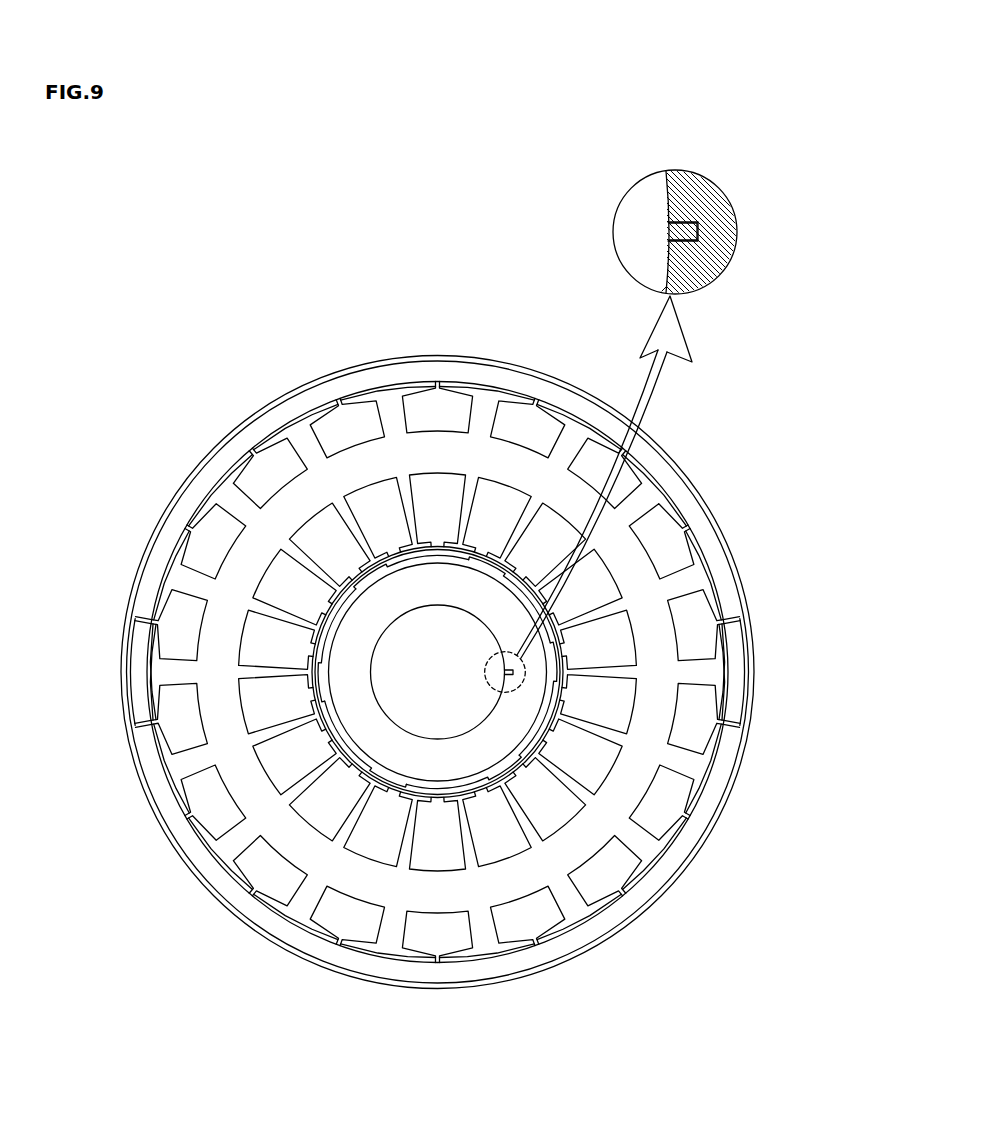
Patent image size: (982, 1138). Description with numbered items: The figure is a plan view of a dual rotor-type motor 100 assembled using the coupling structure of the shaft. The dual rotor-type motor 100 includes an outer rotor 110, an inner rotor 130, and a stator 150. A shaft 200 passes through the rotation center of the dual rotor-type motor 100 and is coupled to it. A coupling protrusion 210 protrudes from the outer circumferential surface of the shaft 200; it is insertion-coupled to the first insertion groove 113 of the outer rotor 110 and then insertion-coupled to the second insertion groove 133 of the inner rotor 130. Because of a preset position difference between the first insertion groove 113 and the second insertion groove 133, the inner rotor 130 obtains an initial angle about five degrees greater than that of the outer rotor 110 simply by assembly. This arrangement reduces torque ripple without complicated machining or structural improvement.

The dual rotor-type motor 100 is at (230, 385).
The outer rotor 110 is at (661, 470).
The first insertion groove 113 is at (700, 229).
The inner rotor 130 is at (520, 706).
The second insertion groove 133 is at (683, 231).
The stator 150 is at (635, 782).
The shaft 200 is at (407, 653).
The coupling protrusion 210 is at (663, 213).